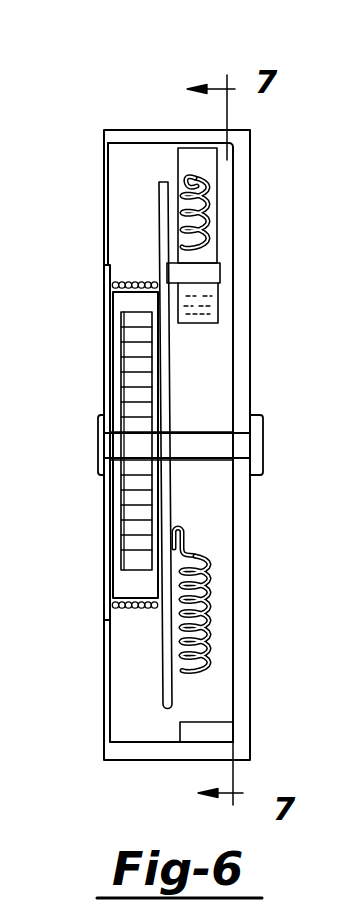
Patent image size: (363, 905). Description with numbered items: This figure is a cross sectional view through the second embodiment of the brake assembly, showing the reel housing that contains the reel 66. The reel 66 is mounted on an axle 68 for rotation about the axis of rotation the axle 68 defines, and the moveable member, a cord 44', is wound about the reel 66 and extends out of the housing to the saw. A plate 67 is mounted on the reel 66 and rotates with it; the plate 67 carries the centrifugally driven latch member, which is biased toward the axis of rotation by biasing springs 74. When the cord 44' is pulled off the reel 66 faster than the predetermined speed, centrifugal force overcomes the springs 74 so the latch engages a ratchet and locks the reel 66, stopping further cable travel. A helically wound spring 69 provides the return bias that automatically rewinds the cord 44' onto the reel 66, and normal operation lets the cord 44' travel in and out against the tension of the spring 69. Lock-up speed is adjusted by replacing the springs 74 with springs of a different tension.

The cord 44' is at (132, 394).
The reel 66 is at (120, 575).
The plate 67 is at (170, 696).
The axle 68 is at (255, 445).
The helically wound spring 69 is at (148, 389).
The biasing springs 74 is at (210, 208).